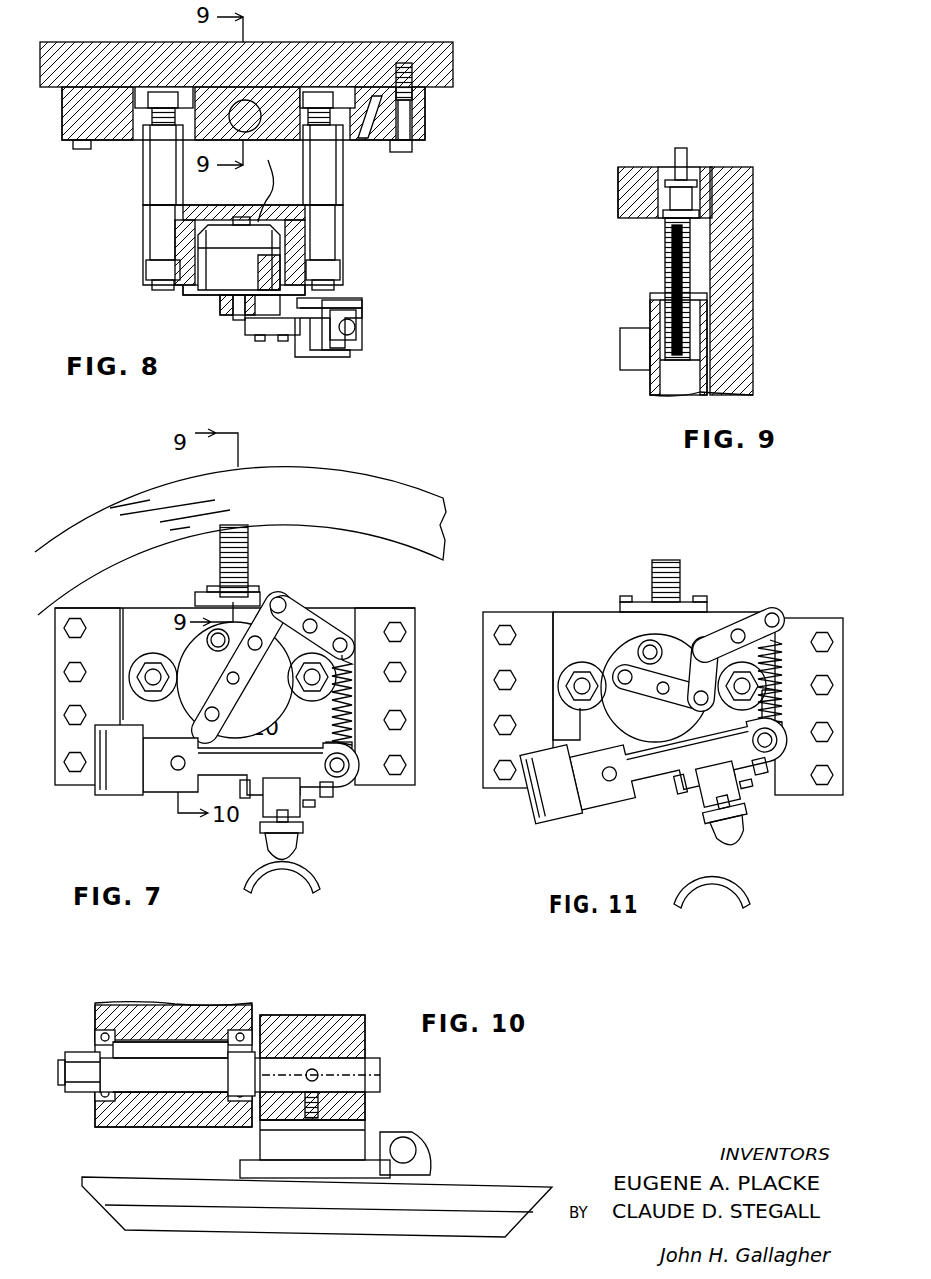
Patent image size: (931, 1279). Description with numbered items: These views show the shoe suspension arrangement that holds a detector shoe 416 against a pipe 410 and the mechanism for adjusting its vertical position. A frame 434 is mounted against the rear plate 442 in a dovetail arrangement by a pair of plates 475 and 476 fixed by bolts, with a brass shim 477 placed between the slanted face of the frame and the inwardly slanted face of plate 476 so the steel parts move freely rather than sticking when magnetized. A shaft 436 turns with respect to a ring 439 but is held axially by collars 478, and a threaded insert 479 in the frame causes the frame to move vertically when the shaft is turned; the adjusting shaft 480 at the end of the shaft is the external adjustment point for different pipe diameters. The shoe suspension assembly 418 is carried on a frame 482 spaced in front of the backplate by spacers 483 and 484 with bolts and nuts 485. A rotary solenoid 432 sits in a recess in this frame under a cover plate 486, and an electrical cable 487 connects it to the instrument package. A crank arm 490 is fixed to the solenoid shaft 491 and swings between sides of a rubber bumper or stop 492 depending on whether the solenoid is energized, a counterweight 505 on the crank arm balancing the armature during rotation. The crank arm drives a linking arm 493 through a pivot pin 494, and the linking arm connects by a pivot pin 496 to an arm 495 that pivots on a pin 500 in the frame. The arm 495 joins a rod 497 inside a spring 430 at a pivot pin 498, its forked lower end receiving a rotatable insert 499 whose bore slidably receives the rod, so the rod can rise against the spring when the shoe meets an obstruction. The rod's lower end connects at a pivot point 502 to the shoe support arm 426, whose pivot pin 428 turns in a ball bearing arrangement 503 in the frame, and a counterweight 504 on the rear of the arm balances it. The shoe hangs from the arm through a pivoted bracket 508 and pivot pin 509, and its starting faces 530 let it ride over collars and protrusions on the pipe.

In FIG. 7, the pipe 410 is at (289, 876).
In FIG. 11, the pipe 410 is at (752, 894).
In FIG. 7, the detector shoe 416 is at (290, 852).
In FIG. 11, the detector shoe 416 is at (736, 833).
In FIG. 10, the detector shoe 416 is at (402, 1225).
In FIG. 8, the shoe suspension assembly 418 is at (252, 331).
In FIG. 7, the shoe suspension assembly 418 is at (262, 636).
In FIG. 11, the shoe suspension assembly 418 is at (616, 662).
In FIG. 7, the shoe support arm 426 is at (303, 800).
In FIG. 11, the shoe support arm 426 is at (660, 775).
In FIG. 10, the shoe support arm 426 is at (336, 1020).
In FIG. 7, the pivot pin 428 is at (178, 772).
In FIG. 11, the pivot pin 428 is at (606, 782).
In FIG. 10, the pivot pin 428 is at (382, 1072).
In FIG. 7, the spring 430 is at (353, 700).
In FIG. 11, the spring 430 is at (784, 660).
In FIG. 8, the rotary solenoid 432 is at (246, 273).
In FIG. 7, the rotary solenoid 432 is at (150, 700).
In FIG. 11, the rotary solenoid 432 is at (648, 735).
In FIG. 8, the frame 434 is at (215, 95).
In FIG. 9, the frame 434 is at (655, 386).
In FIG. 7, the frame 434 is at (148, 610).
In FIG. 11, the frame 434 is at (573, 618).
In FIG. 8, the shaft 436 is at (263, 90).
In FIG. 9, the shaft 436 is at (665, 245).
In FIG. 7, the shaft 436 is at (245, 545).
In FIG. 11, the shaft 436 is at (678, 565).
In FIG. 9, the ring 439 is at (640, 168).
In FIG. 8, the rear plate 442 is at (385, 50).
In FIG. 9, the rear plate 442 is at (747, 256).
In FIG. 7, the rear plate 442 is at (430, 585).
In FIG. 11, the rear plate 442 is at (455, 565).
In FIG. 8, the plate 475 is at (68, 141).
In FIG. 7, the plate 475 is at (103, 615).
In FIG. 11, the plate 475 is at (513, 618).
In FIG. 8, the plate 476 is at (418, 122).
In FIG. 7, the plate 476 is at (395, 610).
In FIG. 11, the plate 476 is at (796, 790).
In FIG. 8, the brass shim 477 is at (372, 130).
In FIG. 9, the collars 478 is at (700, 200).
In FIG. 8, the threaded insert 479 is at (254, 100).
In FIG. 9, the threaded insert 479 is at (650, 296).
In FIG. 9, the adjusting shaft 480 is at (692, 158).
In FIG. 8, the frame 482 is at (312, 240).
In FIG. 7, the frame 482 is at (165, 740).
In FIG. 11, the frame 482 is at (681, 761).
In FIG. 10, the frame 482 is at (155, 1003).
In FIG. 8, the spacer 483 is at (148, 186).
In FIG. 9, the spacer 483 is at (626, 348).
In FIG. 8, the spacer 484 is at (337, 190).
In FIG. 8, the bolts and nuts 485 is at (143, 272).
In FIG. 7, the bolts and nuts 485 is at (150, 660).
In FIG. 11, the bolts and nuts 485 is at (662, 686).
In FIG. 8, the cover plate 486 is at (300, 292).
In FIG. 8, the electrical cable 487 is at (270, 170).
In FIG. 8, the crank arm 490 is at (220, 303).
In FIG. 7, the crank arm 490 is at (252, 672).
In FIG. 11, the crank arm 490 is at (642, 692).
In FIG. 8, the shaft 491 is at (235, 317).
In FIG. 7, the shaft 491 is at (227, 679).
In FIG. 11, the shaft 491 is at (666, 696).
In FIG. 7, the rubber bumper or stop 492 is at (216, 650).
In FIG. 11, the rubber bumper or stop 492 is at (650, 640).
In FIG. 8, the linking arm 493 is at (285, 336).
In FIG. 7, the linking arm 493 is at (262, 620).
In FIG. 11, the linking arm 493 is at (706, 640).
In FIG. 7, the pivot pin 494 is at (257, 652).
In FIG. 8, the arm 495 is at (318, 346).
In FIG. 7, the arm 495 is at (330, 630).
In FIG. 11, the arm 495 is at (752, 626).
In FIG. 7, the pivot pin 496 is at (280, 597).
In FIG. 7, the rod 497 is at (352, 746).
In FIG. 11, the rod 497 is at (782, 720).
In FIG. 7, the pivot pin 498 is at (348, 650).
In FIG. 11, the pivot pin 498 is at (778, 614).
In FIG. 8, the rotatable insert 499 is at (362, 330).
In FIG. 7, the pin 500 is at (312, 619).
In FIG. 11, the pin 500 is at (736, 628).
In FIG. 7, the pivot point 502 is at (348, 774).
In FIG. 11, the pivot point 502 is at (779, 744).
In FIG. 10, the ball bearing arrangement 503 is at (116, 1096).
In FIG. 7, the counterweight 504 is at (100, 795).
In FIG. 11, the counterweight 504 is at (530, 815).
In FIG. 7, the counterweight 505 is at (205, 714).
In FIG. 11, the counterweight 505 is at (607, 672).
In FIG. 7, the pivoted bracket 508 is at (300, 826).
In FIG. 10, the pivoted bracket 508 is at (236, 1098).
In FIG. 7, the pivot pin 509 is at (242, 800).
In FIG. 10, the starting faces 530 is at (82, 1218).